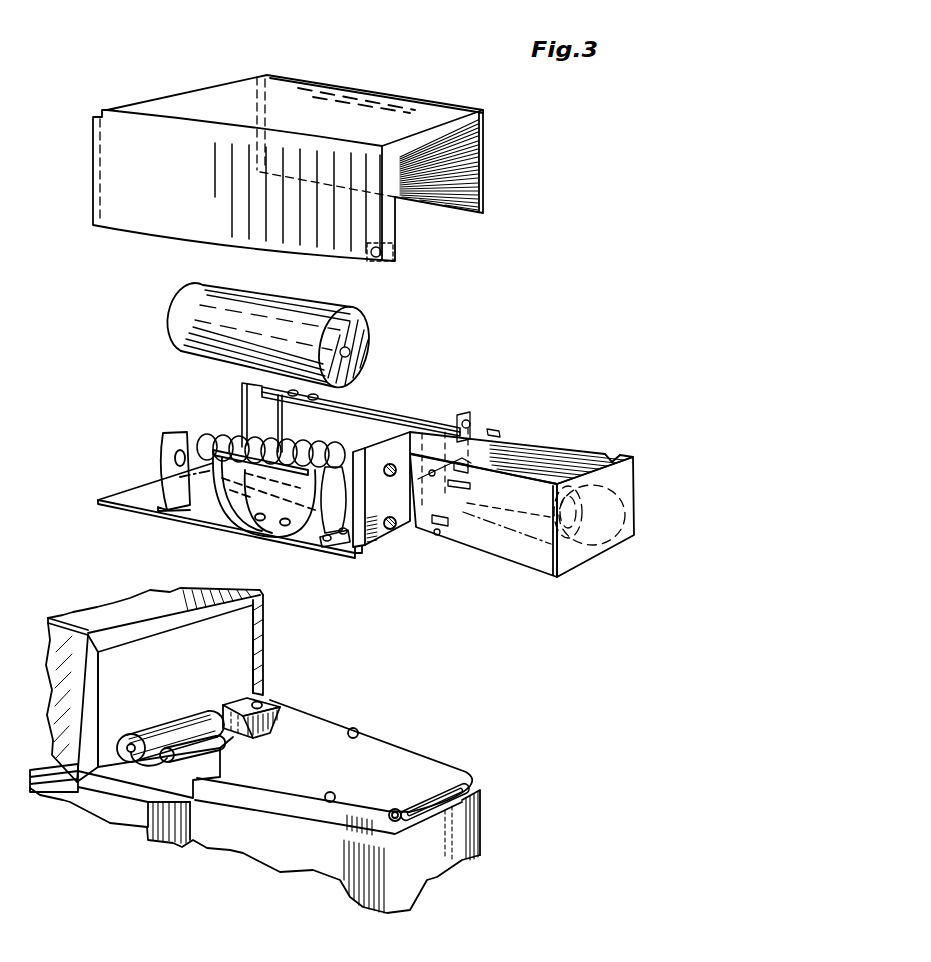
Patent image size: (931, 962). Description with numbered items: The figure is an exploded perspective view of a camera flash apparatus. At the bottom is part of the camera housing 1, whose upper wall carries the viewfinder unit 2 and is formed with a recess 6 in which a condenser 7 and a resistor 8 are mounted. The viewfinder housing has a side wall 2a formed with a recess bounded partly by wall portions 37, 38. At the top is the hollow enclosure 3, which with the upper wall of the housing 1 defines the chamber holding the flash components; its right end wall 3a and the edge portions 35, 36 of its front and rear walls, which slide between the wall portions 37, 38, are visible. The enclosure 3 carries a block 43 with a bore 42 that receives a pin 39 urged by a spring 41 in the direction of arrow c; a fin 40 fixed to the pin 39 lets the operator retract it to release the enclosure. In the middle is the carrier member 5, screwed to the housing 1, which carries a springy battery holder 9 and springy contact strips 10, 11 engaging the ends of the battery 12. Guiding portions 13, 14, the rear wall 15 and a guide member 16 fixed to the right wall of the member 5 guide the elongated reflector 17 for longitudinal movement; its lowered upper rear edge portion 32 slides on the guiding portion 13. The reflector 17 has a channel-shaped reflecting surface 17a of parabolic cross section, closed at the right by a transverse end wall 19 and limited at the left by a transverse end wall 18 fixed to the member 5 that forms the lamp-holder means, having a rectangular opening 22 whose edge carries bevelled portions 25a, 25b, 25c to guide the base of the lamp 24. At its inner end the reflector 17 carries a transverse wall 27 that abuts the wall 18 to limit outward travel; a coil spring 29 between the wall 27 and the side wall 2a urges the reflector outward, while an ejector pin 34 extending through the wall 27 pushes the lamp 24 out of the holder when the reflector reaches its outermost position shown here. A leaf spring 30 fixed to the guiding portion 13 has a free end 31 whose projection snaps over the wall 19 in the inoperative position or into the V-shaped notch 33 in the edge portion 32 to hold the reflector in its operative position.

The camera housing 1 is at (226, 845).
The viewfinder unit 2 is at (113, 612).
The side wall of viewfinder housing 2a is at (150, 652).
The hollow enclosure 3 is at (396, 100).
The right end wall of enclosure 3a is at (390, 218).
The carrier member 5 is at (343, 546).
The recess 6 is at (264, 718).
The condenser 7 is at (173, 737).
The resistor 8 is at (197, 745).
The springy battery holder 9 is at (232, 509).
The springy contact strip 10 is at (180, 442).
The springy contact strip 11 is at (330, 498).
The battery 12 is at (348, 324).
The guiding portion 13 is at (352, 404).
The guiding portion 14 is at (290, 525).
The rear wall 15 is at (372, 416).
The guide member 16 is at (403, 541).
The reflector 17 is at (547, 453).
The reflecting surface 17a is at (497, 553).
The transverse end wall 18 is at (437, 536).
The transverse end wall of reflector 19 is at (604, 542).
The opening 22 is at (454, 460).
The flash lamp 24 is at (477, 527).
The bevelled portion 25a is at (461, 465).
The bevelled portion 25b is at (468, 484).
The bevelled portion 25c is at (443, 520).
The transverse wall 27 is at (433, 470).
The coil spring 29 is at (232, 436).
The leaf spring 30 is at (426, 440).
The end of leaf spring 31 is at (468, 422).
The upper rear edge portion 32 is at (613, 457).
The V-shaped notch 33 is at (495, 432).
The ejector pin 34 is at (462, 504).
The edge portion 35 is at (95, 112).
The edge portion 36 is at (258, 76).
The wall portion 37 is at (93, 727).
The wall portion 38 is at (261, 648).
The pin 39 is at (398, 821).
The fin 40 is at (444, 810).
The spring 41 is at (470, 796).
The bore 42 is at (383, 260).
The block 43 is at (372, 260).
The arrow c is at (486, 778).